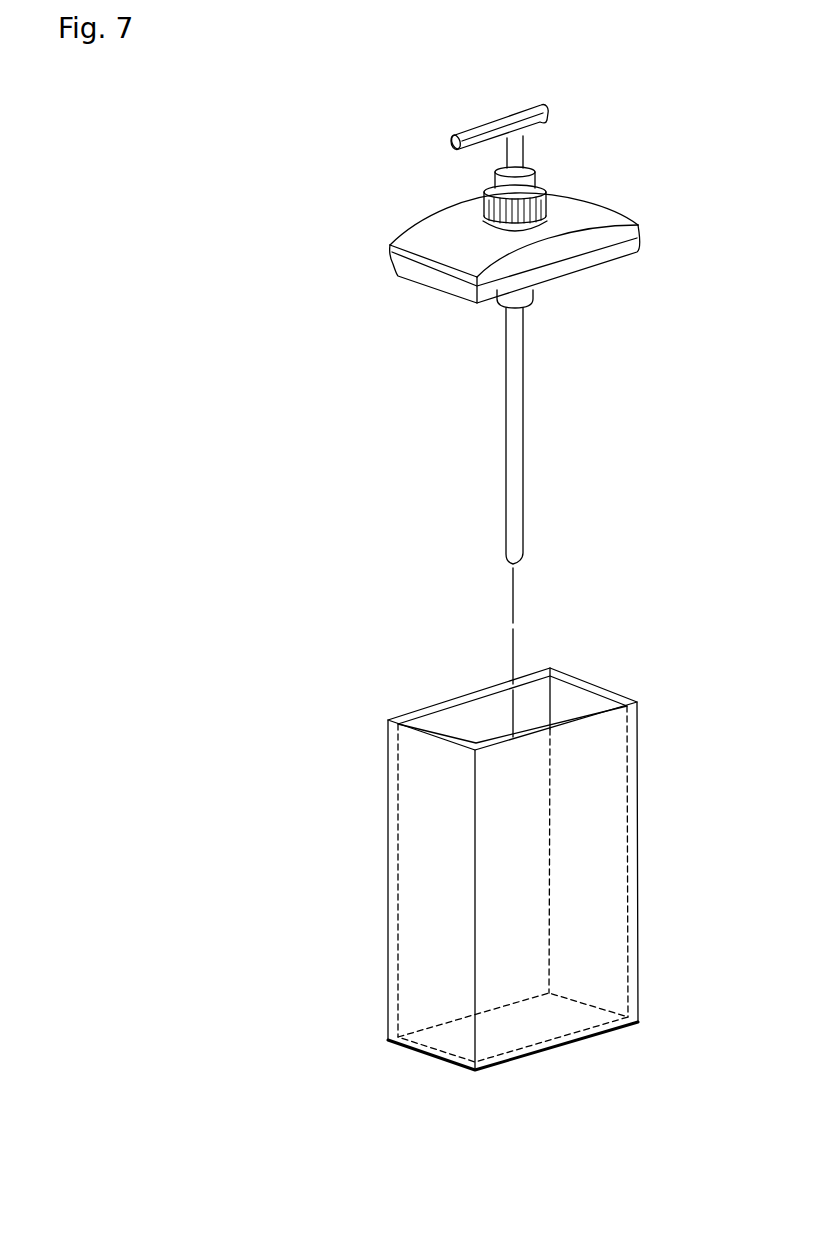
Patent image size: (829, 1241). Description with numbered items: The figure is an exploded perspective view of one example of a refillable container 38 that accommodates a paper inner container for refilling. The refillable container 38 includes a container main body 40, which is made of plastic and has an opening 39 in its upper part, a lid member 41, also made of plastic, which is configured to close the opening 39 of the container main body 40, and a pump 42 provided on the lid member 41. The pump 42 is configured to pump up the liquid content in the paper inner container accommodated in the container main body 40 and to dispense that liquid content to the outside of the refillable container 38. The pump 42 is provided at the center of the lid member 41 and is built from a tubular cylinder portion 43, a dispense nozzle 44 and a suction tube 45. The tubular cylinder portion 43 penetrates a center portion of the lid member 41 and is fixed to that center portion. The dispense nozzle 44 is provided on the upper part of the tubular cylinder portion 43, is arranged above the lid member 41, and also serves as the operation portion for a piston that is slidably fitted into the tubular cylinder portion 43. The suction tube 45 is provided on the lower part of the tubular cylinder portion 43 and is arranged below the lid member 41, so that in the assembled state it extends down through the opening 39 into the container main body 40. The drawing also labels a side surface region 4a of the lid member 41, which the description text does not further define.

The refillable container 38 is at (647, 203).
The opening 39 is at (448, 718).
The container main body 40 is at (413, 790).
The lid member 41 is at (580, 212).
The pump 42 is at (550, 168).
The tubular cylinder portion 43 is at (534, 296).
The dispense nozzle 44 is at (478, 124).
The suction tube 45 is at (516, 465).
The cap side surface 4a is at (605, 257).